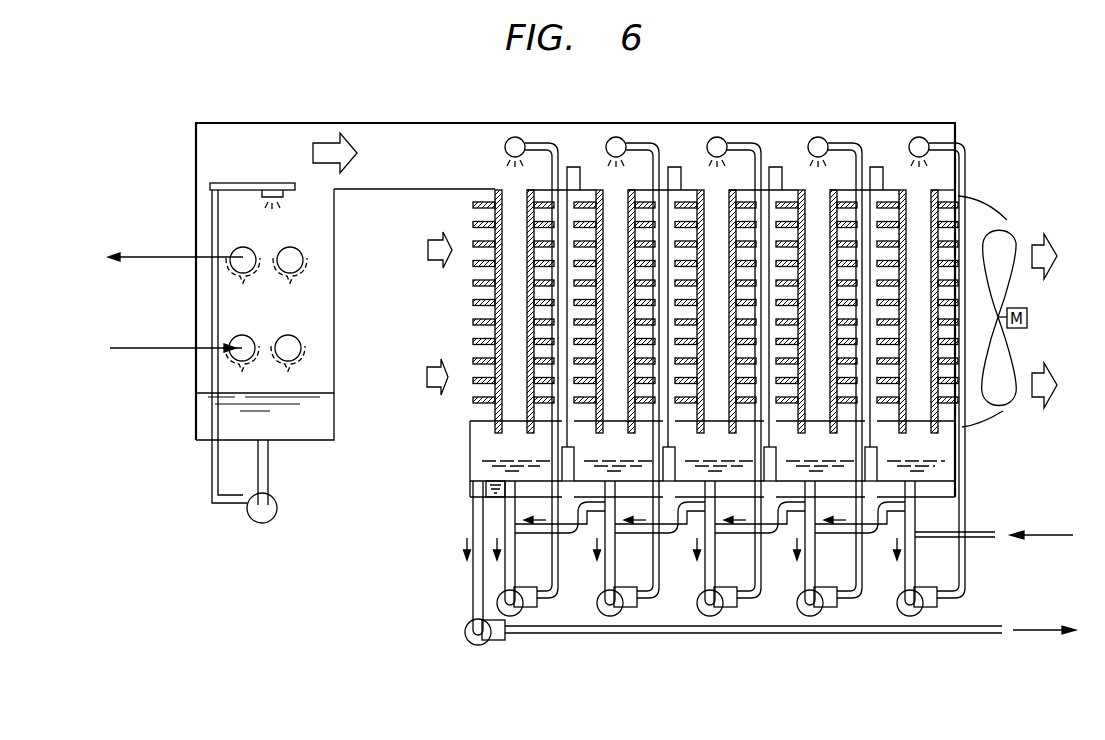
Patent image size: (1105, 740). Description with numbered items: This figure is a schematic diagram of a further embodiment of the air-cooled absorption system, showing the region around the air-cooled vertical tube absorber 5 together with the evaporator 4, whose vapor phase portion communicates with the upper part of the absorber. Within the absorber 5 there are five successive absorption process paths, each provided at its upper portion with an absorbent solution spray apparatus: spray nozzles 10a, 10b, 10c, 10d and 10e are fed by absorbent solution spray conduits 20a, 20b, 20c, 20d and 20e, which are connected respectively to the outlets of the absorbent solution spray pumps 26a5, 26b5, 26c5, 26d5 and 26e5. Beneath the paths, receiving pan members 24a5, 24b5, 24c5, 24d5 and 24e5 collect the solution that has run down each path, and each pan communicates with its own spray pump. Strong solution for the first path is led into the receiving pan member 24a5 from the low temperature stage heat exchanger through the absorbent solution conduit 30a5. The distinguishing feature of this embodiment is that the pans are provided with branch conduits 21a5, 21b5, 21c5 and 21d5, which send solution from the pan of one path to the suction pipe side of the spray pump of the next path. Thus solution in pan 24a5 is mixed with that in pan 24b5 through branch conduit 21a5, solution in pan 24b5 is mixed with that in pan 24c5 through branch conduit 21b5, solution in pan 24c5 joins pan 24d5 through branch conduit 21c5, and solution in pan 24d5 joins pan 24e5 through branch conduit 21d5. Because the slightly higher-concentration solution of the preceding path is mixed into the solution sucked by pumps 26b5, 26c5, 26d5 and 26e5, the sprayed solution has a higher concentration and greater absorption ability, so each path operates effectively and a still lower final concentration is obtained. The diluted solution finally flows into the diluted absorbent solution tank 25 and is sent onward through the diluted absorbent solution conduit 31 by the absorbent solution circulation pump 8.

The evaporator 4 is at (322, 373).
The air-cooled vertical tube absorber 5 is at (924, 124).
The absorbent solution circulation pump 8 is at (465, 632).
The absorbent solution spray nozzle 10a is at (925, 198).
The absorbent solution spray nozzle 10b is at (824, 198).
The absorbent solution spray nozzle 10c is at (723, 198).
The absorbent solution spray nozzle 10d is at (622, 198).
The absorbent solution spray nozzle 10e is at (521, 198).
The absorbent solution spray conduit 20a is at (968, 145).
The absorbent solution spray conduit 20b is at (860, 139).
The absorbent solution spray conduit 20c is at (759, 139).
The absorbent solution spray conduit 20d is at (657, 139).
The absorbent solution spray conduit 20e is at (556, 139).
The branch conduit 21a5 is at (875, 537).
The branch conduit 21b5 is at (773, 537).
The branch conduit 21c5 is at (672, 537).
The branch conduit 21d5 is at (571, 537).
The receiving pan member 24a5 is at (942, 468).
The receiving pan member 24b5 is at (782, 470).
The receiving pan member 24c5 is at (681, 470).
The receiving pan member 24d5 is at (578, 470).
The receiving pan member 24e5 is at (495, 463).
The diluted absorbent solution tank 25 is at (492, 495).
The absorbent solution spray pump 26a5 is at (917, 634).
The absorbent solution spray pump 26b5 is at (828, 634).
The absorbent solution spray pump 26c5 is at (728, 634).
The absorbent solution spray pump 26d5 is at (628, 634).
The absorbent solution spray pump 26e5 is at (528, 634).
The absorbent solution conduit 30a5 is at (987, 540).
The diluted absorbent solution conduit 31 is at (983, 636).